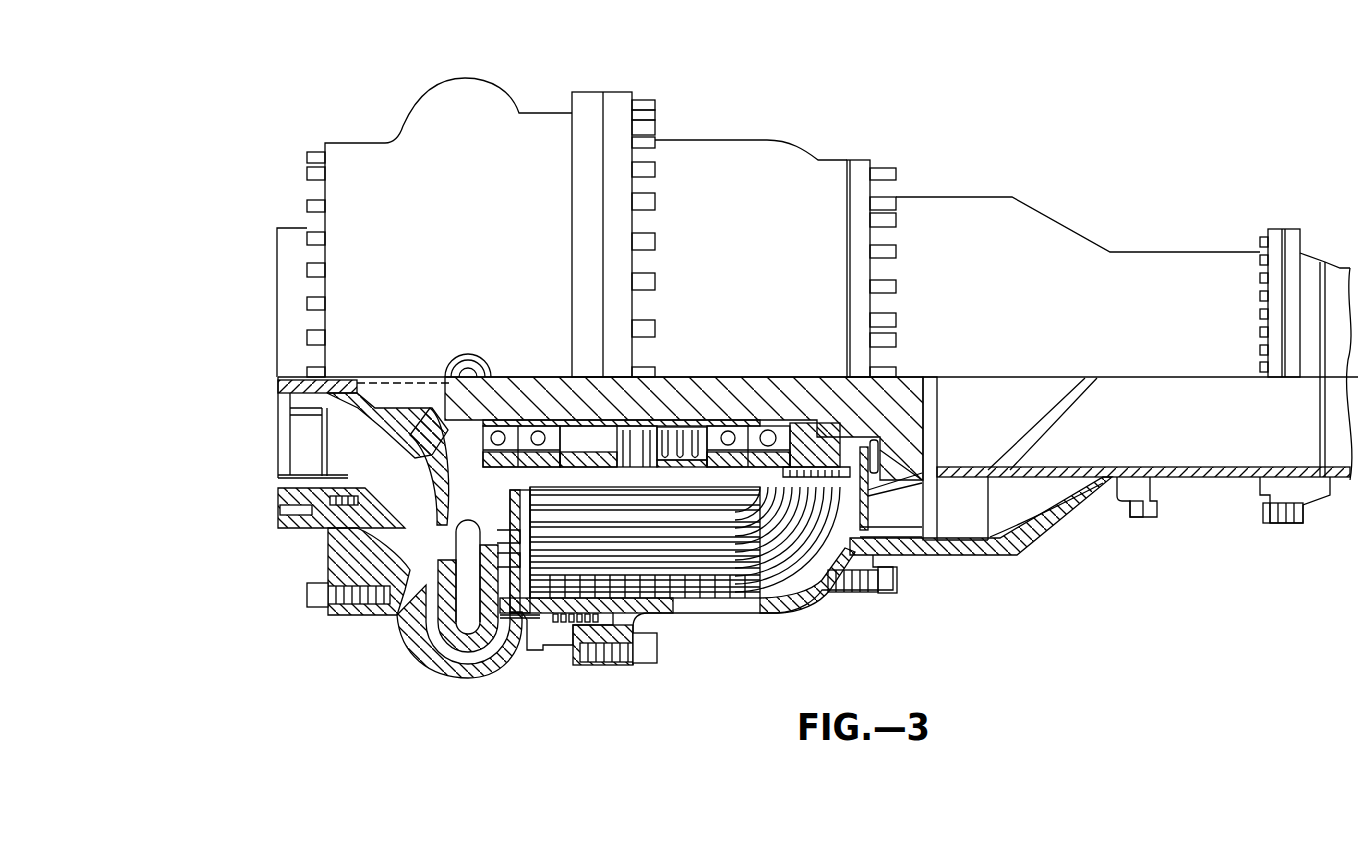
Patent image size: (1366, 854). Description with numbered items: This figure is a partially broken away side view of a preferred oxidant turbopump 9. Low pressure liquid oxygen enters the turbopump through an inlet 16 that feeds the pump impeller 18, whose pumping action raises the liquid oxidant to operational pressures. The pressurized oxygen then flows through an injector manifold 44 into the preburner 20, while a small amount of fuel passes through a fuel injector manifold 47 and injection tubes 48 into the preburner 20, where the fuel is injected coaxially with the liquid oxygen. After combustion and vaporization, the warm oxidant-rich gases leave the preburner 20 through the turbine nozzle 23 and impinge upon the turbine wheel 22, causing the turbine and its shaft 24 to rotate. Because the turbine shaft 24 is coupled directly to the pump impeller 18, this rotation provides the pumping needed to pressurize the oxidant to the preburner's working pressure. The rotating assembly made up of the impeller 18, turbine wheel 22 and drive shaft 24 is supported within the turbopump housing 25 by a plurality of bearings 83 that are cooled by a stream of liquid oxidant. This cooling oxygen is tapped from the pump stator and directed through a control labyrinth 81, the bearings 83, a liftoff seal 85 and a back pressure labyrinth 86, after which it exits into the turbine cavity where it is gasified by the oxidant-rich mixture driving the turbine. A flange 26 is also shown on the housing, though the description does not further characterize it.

The oxidant turbopump 9 is at (972, 102).
The inlet 16 is at (270, 436).
The pump impeller 18 is at (393, 427).
The preburner 20 is at (687, 557).
The turbine wheel 22 is at (905, 498).
The turbine nozzle 23 is at (840, 517).
The turbine shaft 24 is at (723, 397).
The turbopump housing 25 is at (390, 190).
The mounting flange 26 is at (1170, 475).
The injector manifold 44 is at (500, 551).
The fuel injector manifold 47 is at (470, 607).
The injection tubes 48 is at (503, 541).
The control labyrinth 81 is at (443, 383).
The bearings 83 is at (533, 431).
The liftoff seal 85 is at (820, 400).
The back pressure labyrinth 86 is at (907, 377).